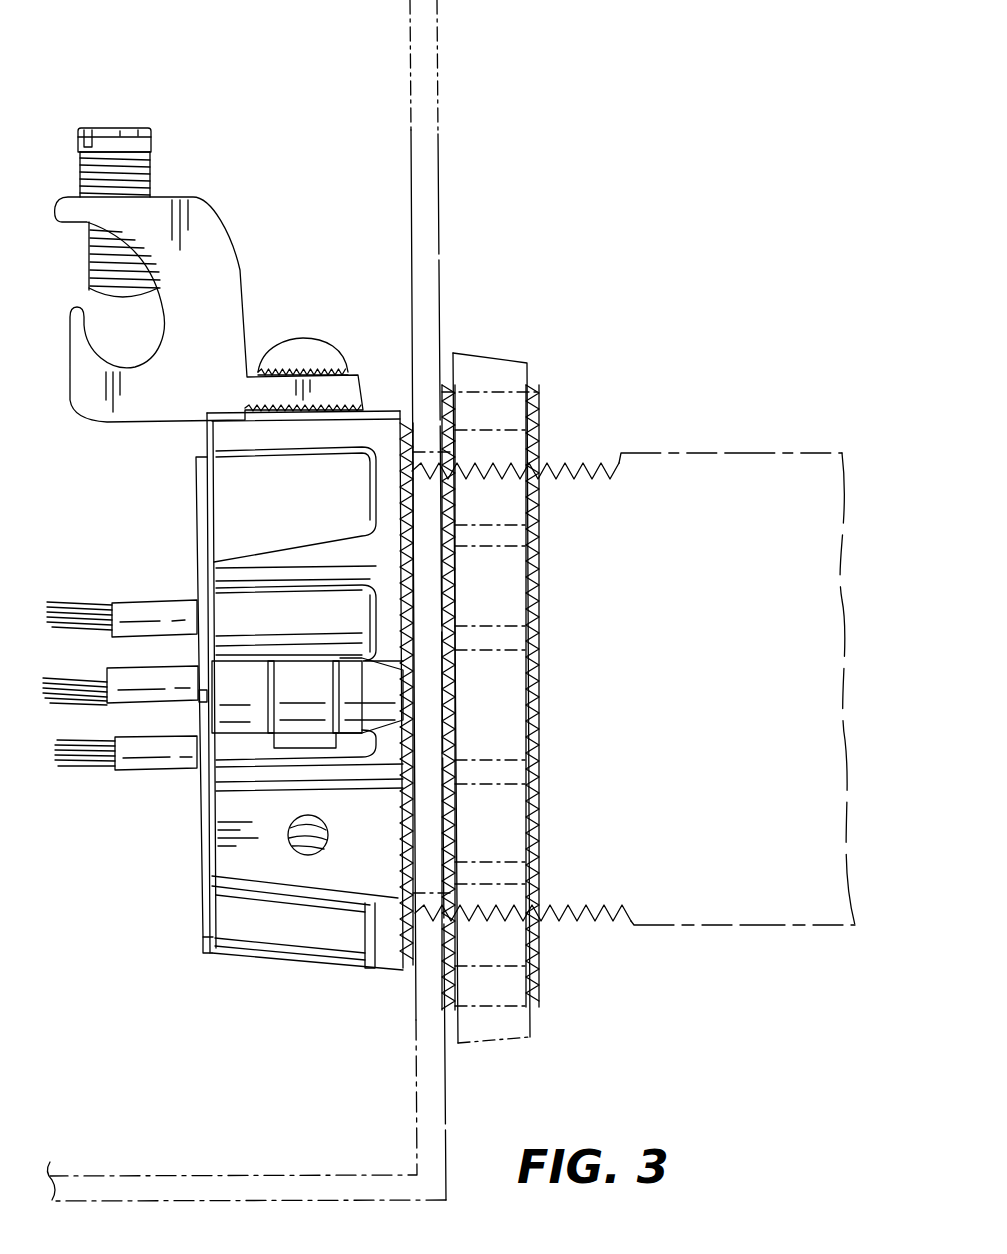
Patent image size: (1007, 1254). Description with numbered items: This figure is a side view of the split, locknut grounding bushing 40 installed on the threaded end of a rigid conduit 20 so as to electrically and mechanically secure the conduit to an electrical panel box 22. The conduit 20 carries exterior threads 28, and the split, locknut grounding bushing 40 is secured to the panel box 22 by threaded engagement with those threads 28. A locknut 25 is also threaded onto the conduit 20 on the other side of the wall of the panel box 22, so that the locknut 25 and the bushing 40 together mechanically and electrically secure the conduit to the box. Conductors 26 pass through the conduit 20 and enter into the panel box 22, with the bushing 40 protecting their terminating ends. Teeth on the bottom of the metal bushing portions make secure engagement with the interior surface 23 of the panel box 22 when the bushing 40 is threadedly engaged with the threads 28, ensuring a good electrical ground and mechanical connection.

The rigid conduit 20 is at (697, 452).
The panel box 22 is at (437, 132).
The interior surface 23 is at (410, 129).
The locknut 25 is at (500, 355).
The conductors 26 is at (137, 672).
The threads 28 is at (578, 462).
The split, locknut grounding bushing 40 is at (361, 322).